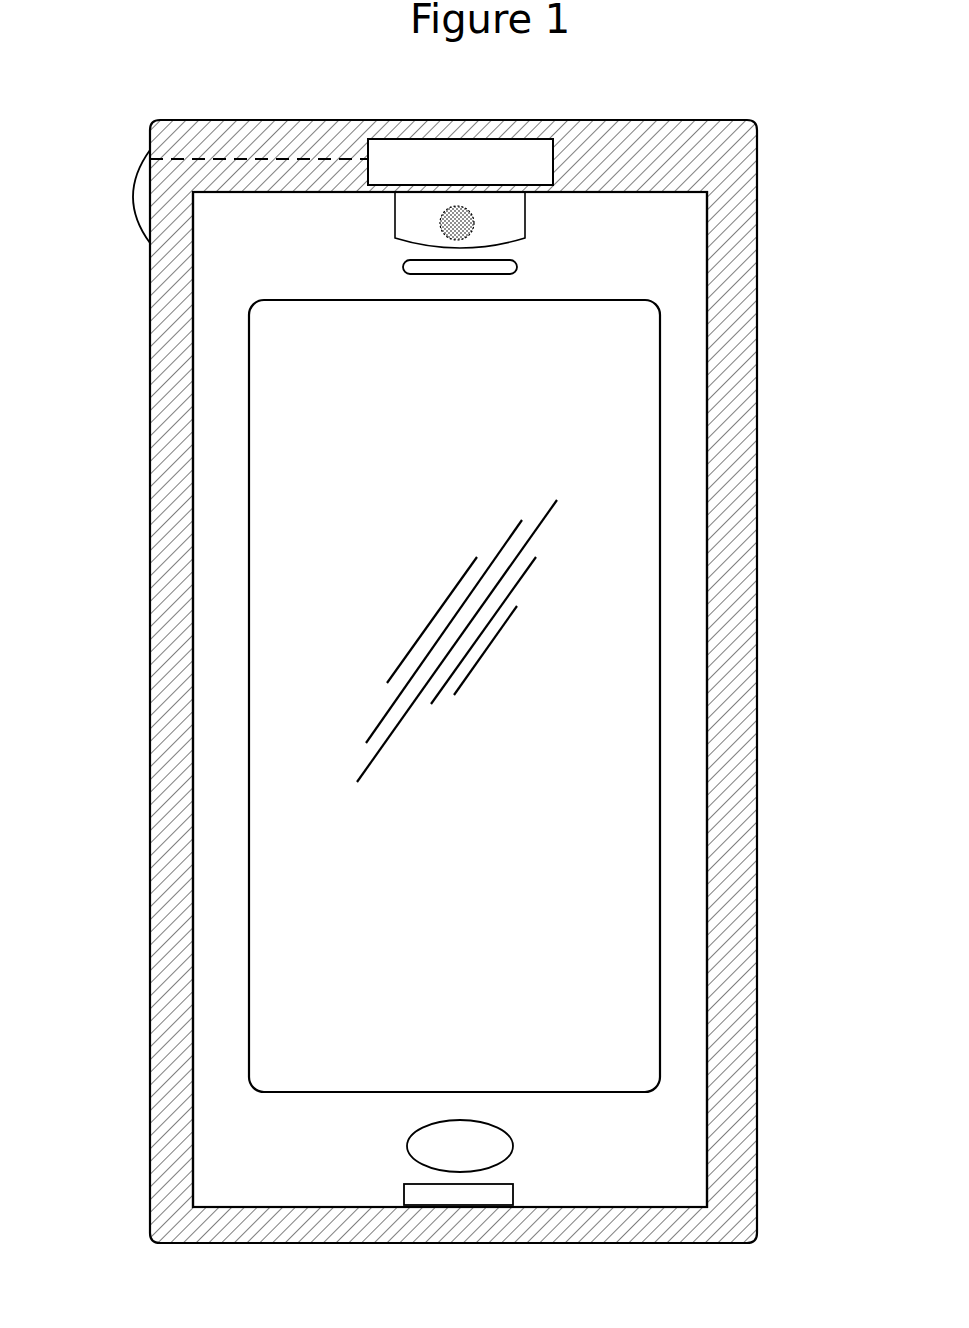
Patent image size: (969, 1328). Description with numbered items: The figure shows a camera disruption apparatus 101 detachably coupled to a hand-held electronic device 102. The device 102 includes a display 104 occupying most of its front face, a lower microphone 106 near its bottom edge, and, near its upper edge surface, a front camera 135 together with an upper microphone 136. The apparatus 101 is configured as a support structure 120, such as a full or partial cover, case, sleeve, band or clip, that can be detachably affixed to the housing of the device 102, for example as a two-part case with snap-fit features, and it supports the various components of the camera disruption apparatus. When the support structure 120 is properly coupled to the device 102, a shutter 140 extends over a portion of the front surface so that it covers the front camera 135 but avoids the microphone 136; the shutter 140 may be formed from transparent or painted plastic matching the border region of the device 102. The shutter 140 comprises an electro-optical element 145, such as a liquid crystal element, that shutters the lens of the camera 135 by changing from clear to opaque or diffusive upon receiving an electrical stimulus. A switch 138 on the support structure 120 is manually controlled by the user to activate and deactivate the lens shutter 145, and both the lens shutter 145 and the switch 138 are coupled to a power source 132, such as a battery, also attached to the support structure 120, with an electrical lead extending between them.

The camera disruption apparatus 101 is at (132, 84).
The support structure 120 is at (735, 163).
The hand-held electronic device 102 is at (713, 340).
The switch 138 is at (133, 200).
The power source 132 is at (441, 175).
The shutter 140 is at (395, 205).
The electro-optical element 145 is at (475, 218).
The front camera 135 is at (472, 228).
The upper microphone 136 is at (517, 270).
The display 104 is at (659, 625).
The lower microphone 106 is at (513, 1195).